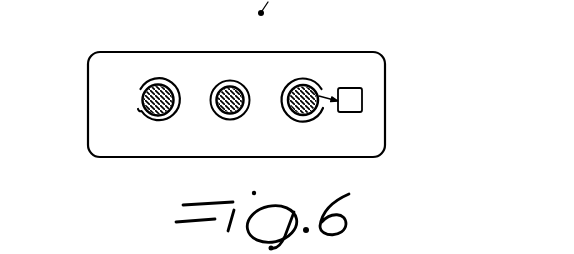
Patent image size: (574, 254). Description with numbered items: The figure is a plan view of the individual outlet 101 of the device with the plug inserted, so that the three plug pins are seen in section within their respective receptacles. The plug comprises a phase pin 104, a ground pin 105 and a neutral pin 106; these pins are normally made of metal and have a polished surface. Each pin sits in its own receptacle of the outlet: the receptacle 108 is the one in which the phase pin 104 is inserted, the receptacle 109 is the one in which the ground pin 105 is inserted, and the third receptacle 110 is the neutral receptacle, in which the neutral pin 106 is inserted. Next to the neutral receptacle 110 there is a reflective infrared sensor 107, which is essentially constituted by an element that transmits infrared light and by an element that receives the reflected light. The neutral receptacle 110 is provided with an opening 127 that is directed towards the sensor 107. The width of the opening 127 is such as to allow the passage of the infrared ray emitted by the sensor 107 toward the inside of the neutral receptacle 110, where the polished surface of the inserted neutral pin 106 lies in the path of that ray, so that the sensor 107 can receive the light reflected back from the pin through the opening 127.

The individual outlet 101 is at (45, 192).
The phase pin 104 is at (146, 107).
The ground pin 105 is at (134, 176).
The neutral pin 106 is at (282, 83).
The reflective infrared sensor 107 is at (395, 103).
The receptacle 108 is at (149, 79).
The receptacle 109 is at (227, 80).
The third receptacle 110 is at (297, 117).
The opening 127 is at (355, 34).